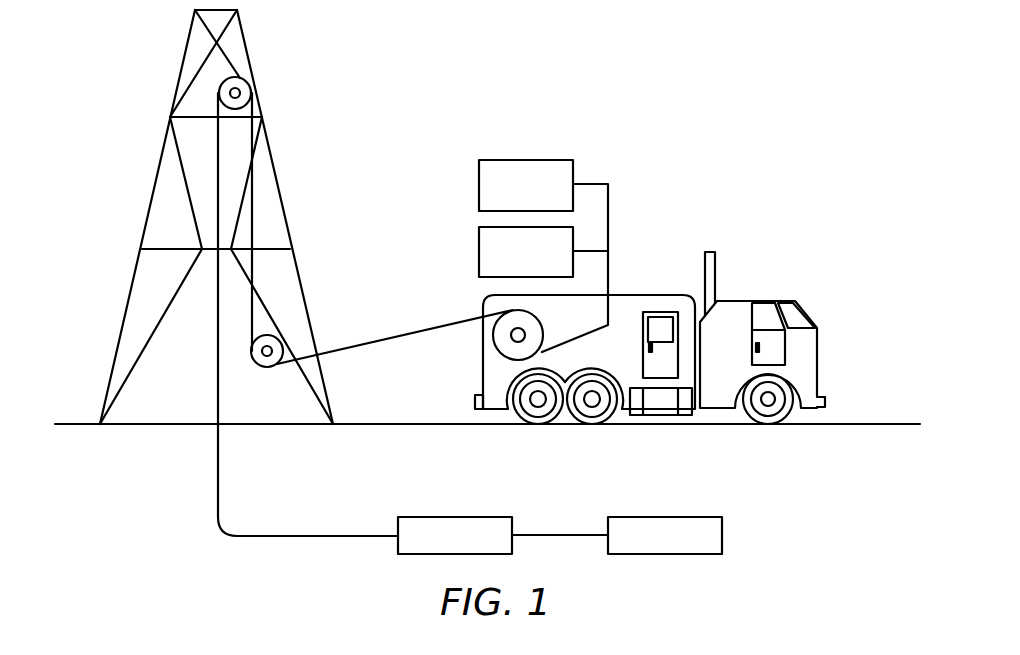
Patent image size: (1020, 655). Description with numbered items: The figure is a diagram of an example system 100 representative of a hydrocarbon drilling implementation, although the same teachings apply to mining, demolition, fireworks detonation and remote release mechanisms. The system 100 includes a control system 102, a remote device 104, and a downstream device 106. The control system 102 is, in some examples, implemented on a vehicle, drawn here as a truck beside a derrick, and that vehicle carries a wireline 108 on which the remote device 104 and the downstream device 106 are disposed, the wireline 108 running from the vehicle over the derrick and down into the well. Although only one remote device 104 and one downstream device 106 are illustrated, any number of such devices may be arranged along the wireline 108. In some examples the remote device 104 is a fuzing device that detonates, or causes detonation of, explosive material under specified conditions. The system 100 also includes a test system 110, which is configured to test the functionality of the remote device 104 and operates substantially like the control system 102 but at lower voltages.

The system 100 is at (104, 40).
The control system 102 is at (509, 198).
The remote device 104 is at (437, 548).
The downstream device 106 is at (647, 548).
The wireline 108 is at (218, 470).
The test system 110 is at (509, 264).